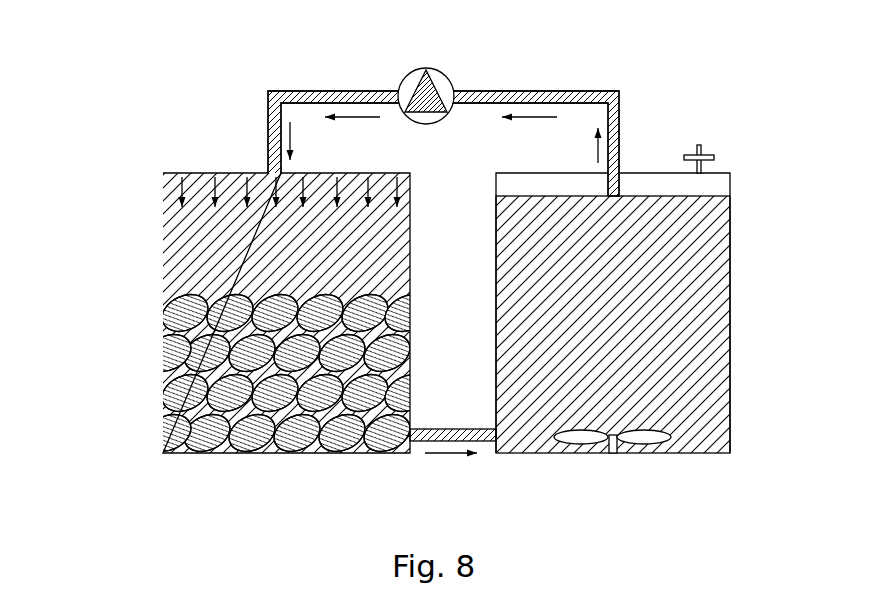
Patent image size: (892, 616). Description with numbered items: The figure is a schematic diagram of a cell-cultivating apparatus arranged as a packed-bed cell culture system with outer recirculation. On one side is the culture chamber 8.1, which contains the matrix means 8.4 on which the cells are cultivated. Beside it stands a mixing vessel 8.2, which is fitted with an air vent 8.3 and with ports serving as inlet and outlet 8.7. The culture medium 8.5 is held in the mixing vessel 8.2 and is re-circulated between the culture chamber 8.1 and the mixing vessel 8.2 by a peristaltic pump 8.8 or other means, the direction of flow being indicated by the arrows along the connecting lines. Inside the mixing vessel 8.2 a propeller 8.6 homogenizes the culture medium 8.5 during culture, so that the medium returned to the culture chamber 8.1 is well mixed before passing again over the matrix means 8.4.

The culture chamber 8.1 is at (237, 291).
The mixing vessel 8.2 is at (655, 298).
The air vent 8.3 is at (706, 142).
The matrix means 8.4 is at (187, 312).
The culture medium 8.5 is at (694, 337).
The propeller 8.6 is at (636, 448).
The inlet and outlet 8.7 is at (604, 85).
The peristaltic pump 8.8 is at (448, 71).